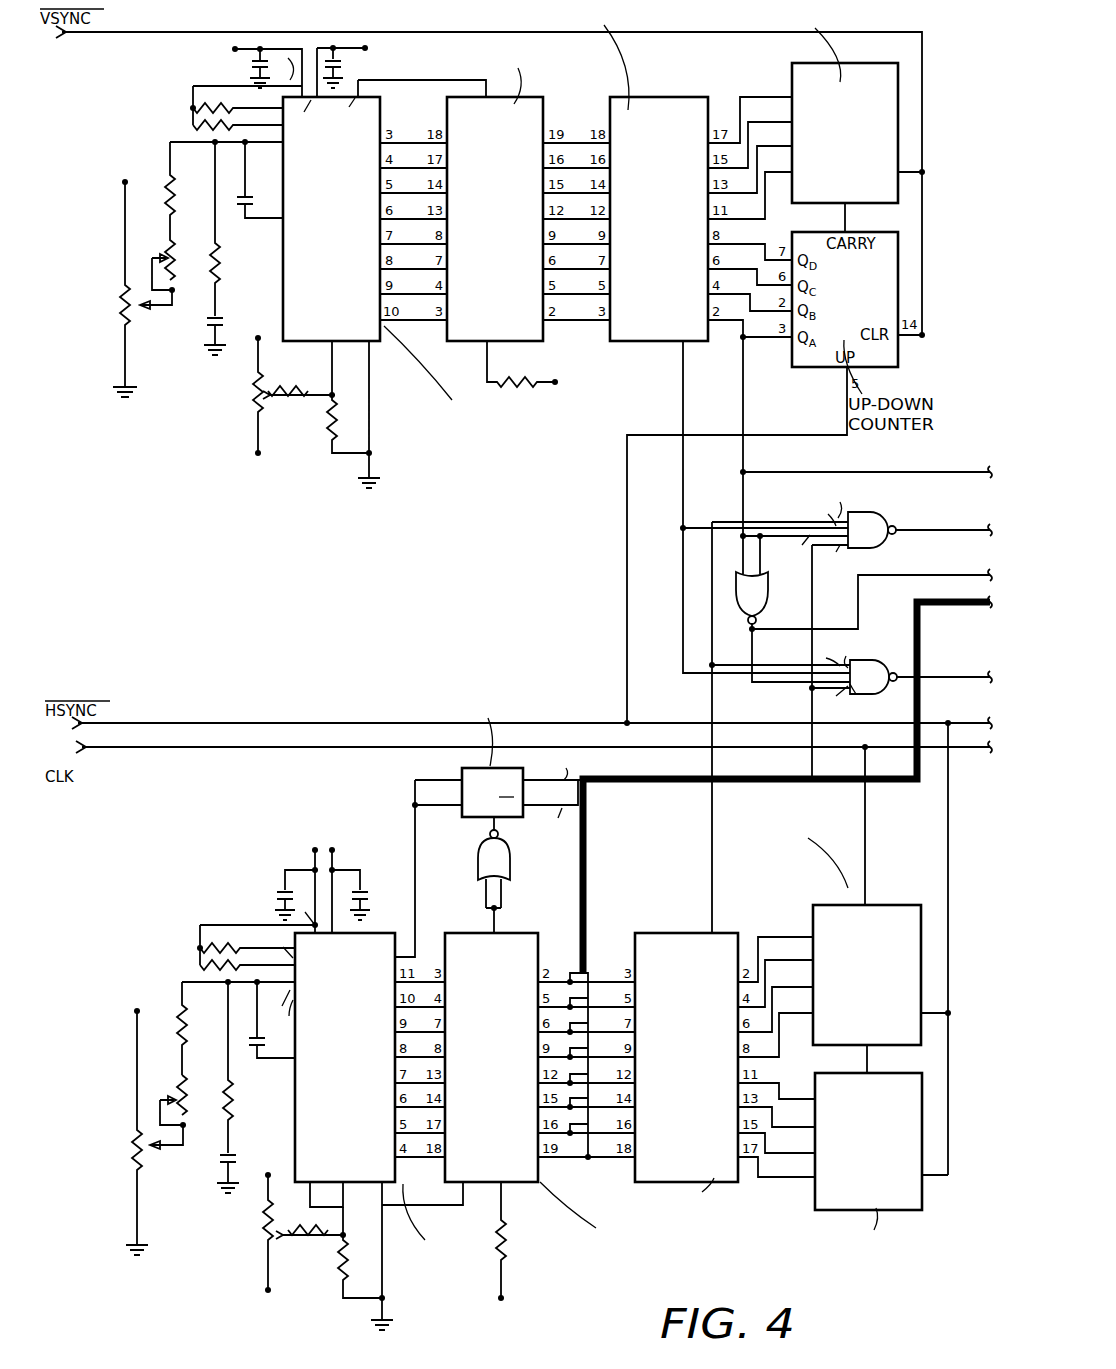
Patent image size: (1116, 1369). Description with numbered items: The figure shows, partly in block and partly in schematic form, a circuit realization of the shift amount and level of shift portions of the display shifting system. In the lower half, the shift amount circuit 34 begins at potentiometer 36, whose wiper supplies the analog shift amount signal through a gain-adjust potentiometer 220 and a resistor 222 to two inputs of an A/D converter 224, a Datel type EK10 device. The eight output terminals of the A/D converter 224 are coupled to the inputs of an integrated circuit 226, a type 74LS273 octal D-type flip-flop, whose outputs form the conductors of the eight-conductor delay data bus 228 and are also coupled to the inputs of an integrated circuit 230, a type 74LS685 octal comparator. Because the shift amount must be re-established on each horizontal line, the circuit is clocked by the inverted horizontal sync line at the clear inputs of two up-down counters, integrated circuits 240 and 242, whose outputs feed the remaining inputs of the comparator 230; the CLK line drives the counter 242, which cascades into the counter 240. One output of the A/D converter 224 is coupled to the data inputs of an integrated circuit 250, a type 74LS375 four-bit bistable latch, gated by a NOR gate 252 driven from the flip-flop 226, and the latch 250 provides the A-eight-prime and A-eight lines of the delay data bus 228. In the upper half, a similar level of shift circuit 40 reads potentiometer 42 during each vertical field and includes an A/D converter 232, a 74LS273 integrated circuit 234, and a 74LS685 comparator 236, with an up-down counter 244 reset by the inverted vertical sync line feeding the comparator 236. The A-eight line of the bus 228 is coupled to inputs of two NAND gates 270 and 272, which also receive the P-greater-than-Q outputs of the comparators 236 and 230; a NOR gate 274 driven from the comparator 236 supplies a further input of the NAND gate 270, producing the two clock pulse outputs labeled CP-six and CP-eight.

The shift amount circuit 34 is at (260, 842).
The potentiometer 36 is at (121, 998).
The level of shift circuit 40 is at (328, 495).
The potentiometer 42 is at (89, 178).
The gain-adjust potentiometer 220 is at (190, 1090).
The resistor 222 is at (165, 1028).
The A/D converter 224 is at (298, 1116).
The integrated circuit 226 is at (542, 1192).
The delay data bus 228 is at (968, 604).
The integrated circuit 230 is at (673, 910).
The A/D converter 232 is at (392, 356).
The integrated circuit 234 is at (534, 79).
The integrated circuit 236 is at (679, 70).
The integrated circuit 240 is at (860, 1212).
The integrated circuit 242 is at (850, 904).
The integrated circuit 244 is at (797, 69).
The integrated circuit 250 is at (437, 773).
The NOR gate 252 is at (528, 862).
The NAND gate 270 is at (860, 662).
The NAND gate 272 is at (866, 528).
The NOR gate 274 is at (762, 586).